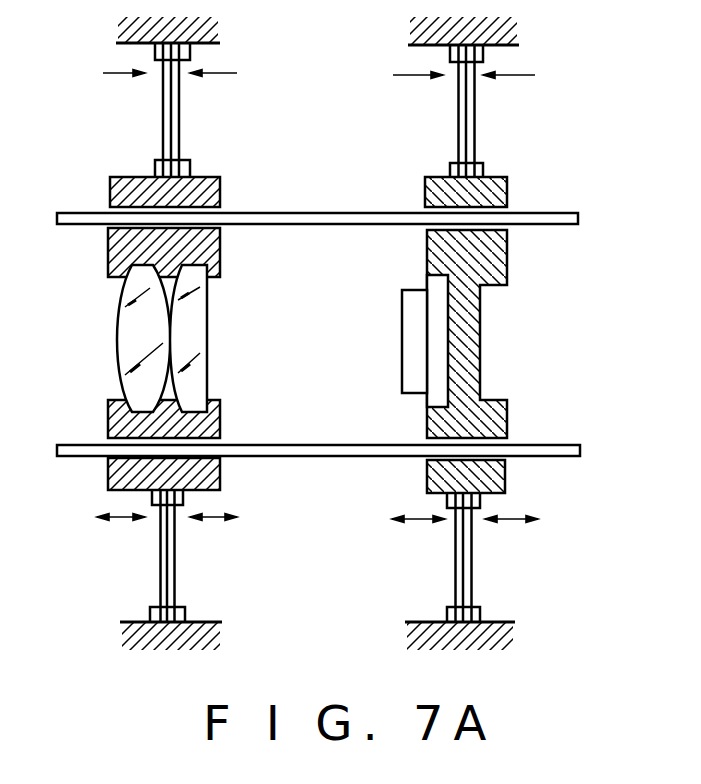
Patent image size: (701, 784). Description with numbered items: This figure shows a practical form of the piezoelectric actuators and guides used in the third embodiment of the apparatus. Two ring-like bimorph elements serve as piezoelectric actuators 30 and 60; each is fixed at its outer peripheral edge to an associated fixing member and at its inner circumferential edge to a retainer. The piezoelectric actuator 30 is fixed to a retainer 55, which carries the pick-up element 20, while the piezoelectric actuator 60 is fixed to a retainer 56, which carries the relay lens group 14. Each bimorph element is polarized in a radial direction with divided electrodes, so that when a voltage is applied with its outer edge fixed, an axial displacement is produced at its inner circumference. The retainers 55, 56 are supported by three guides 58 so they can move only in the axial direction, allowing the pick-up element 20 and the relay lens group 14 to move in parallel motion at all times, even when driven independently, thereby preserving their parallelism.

The relay lens group 14 is at (117, 348).
The pick-up element 20 is at (403, 318).
The piezoelectric actuator 30 is at (474, 570).
The retainer 55 is at (507, 186).
The retainer 56 is at (110, 190).
The guide 58 is at (571, 213).
The piezoelectric actuator 60 is at (160, 572).